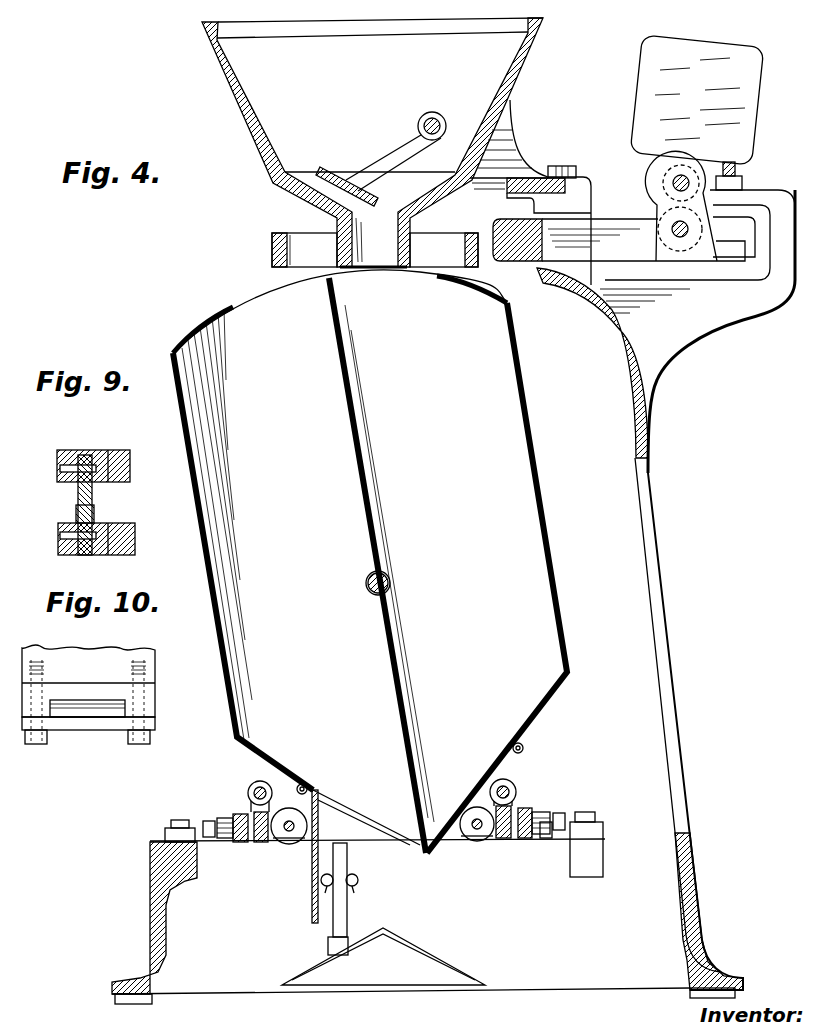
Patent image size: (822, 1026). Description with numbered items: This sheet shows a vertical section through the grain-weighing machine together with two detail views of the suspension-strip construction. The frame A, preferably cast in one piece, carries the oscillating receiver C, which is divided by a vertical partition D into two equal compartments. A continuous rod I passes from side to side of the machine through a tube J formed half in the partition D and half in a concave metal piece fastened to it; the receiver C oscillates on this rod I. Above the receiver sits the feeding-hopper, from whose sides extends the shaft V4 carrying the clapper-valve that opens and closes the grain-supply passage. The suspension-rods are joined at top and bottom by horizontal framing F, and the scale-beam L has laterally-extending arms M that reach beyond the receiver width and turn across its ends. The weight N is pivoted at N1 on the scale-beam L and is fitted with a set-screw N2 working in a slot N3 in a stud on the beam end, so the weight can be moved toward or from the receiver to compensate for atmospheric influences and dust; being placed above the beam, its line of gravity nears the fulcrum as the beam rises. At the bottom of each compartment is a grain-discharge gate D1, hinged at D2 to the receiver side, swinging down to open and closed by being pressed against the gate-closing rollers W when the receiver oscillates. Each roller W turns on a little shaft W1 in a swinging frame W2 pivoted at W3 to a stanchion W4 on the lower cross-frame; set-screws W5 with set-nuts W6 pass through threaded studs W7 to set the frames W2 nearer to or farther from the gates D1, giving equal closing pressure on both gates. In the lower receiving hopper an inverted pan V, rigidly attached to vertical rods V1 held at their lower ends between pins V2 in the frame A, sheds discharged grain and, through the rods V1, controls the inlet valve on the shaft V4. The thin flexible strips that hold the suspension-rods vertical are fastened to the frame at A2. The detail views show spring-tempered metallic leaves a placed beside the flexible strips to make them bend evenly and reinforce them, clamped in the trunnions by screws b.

In FIG. 4, the shaft V4 is at (438, 121).
In FIG. 4, the horizontal framing F is at (375, 250).
In FIG. 4, the laterally-extending arms M is at (517, 240).
In FIG. 4, the scale-beam L is at (643, 240).
In FIG. 4, the weight N is at (697, 100).
In FIG. 4, the pivot N1 is at (680, 229).
In FIG. 4, the set-screw N2 is at (681, 183).
In FIG. 4, the slot N3 is at (652, 175).
In FIG. 4, the frame A is at (646, 728).
In FIG. 4, the fastening points A2 is at (604, 832).
In FIG. 4, the oscillating receiver C is at (370, 561).
In FIG. 4, the partition D is at (346, 372).
In FIG. 4, the grain-discharge gates D1 is at (311, 866).
In FIG. 4, the hinges D2 is at (297, 786).
In FIG. 4, the rod I is at (389, 583).
In FIG. 4, the tube J is at (371, 594).
In FIG. 4, the inverted pan V is at (392, 930).
In FIG. 4, the vertical rods V1 is at (347, 899).
In FIG. 4, the pins V2 is at (345, 875).
In FIG. 4, the gate-closing rollers W is at (382, 825).
In FIG. 4, the shafts W1 is at (300, 838).
In FIG. 4, the swinging frames W2 is at (262, 843).
In FIG. 4, the pivots W3 is at (256, 789).
In FIG. 4, the stanchions W4 is at (242, 814).
In FIG. 4, the set-screws W5 is at (204, 822).
In FIG. 4, the set-nuts W6 is at (198, 843).
In FIG. 4, the threaded studs W7 is at (232, 843).
In FIG. 9, the metallic leaves a is at (78, 494).
In FIG. 10, the screws b is at (36, 744).